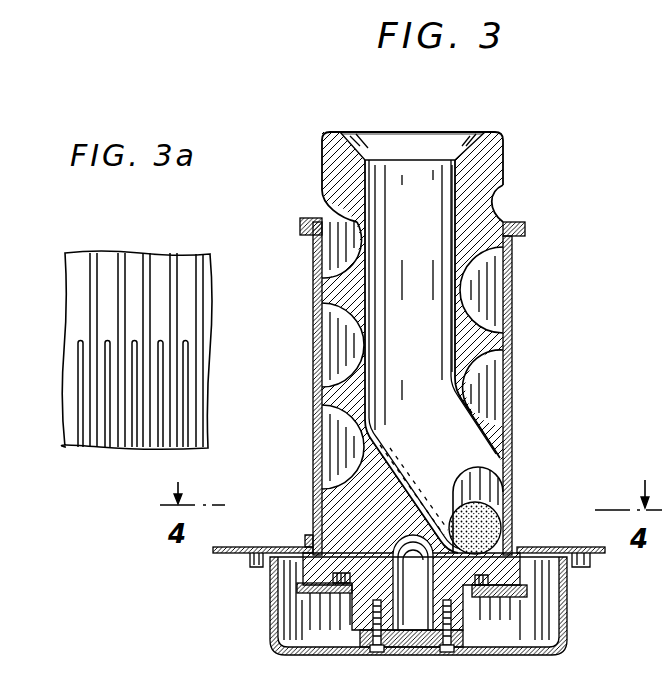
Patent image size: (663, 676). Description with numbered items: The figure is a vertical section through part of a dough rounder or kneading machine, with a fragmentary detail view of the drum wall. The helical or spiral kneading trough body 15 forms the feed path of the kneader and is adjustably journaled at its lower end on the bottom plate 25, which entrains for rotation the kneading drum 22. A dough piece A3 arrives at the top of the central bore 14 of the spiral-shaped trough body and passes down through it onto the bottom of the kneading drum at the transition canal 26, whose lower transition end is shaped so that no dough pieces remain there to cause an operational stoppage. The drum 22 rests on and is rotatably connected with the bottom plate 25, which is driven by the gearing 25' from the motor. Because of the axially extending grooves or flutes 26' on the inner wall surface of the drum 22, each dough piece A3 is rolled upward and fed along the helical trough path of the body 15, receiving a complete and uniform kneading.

In FIG. 3, the central bore 14 is at (427, 142).
In FIG. 3, the kneading rounder 15 is at (474, 190).
In FIG. 3, the kneading drum 22 is at (313, 330).
In FIG. 3A, the kneading drum 22 is at (80, 258).
In FIG. 3, the flutes 26' is at (445, 355).
In FIG. 3A, the flutes 26' is at (110, 350).
In FIG. 3, the transition canal 26 is at (510, 496).
In FIG. 3, the dough piece A3 is at (512, 508).
In FIG. 3, the bottom plate 25 is at (409, 535).
In FIG. 3, the gearing 25' is at (389, 606).